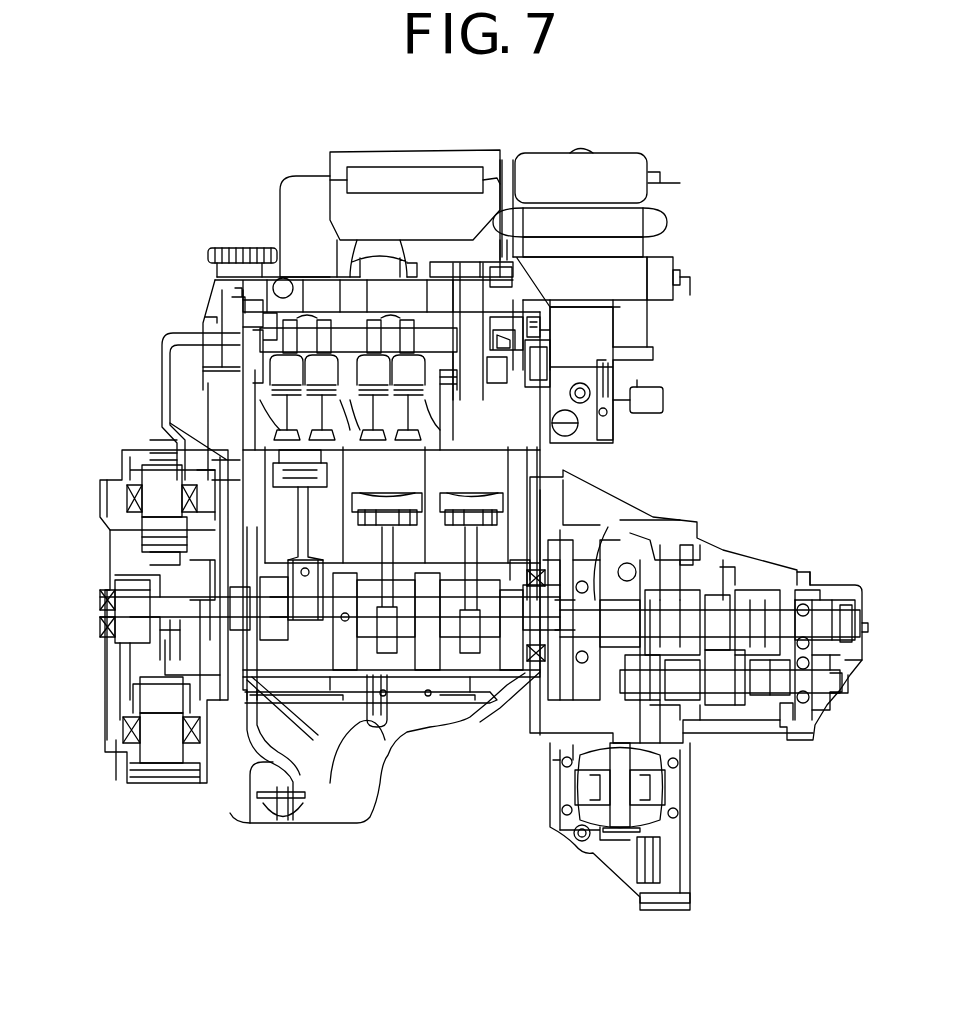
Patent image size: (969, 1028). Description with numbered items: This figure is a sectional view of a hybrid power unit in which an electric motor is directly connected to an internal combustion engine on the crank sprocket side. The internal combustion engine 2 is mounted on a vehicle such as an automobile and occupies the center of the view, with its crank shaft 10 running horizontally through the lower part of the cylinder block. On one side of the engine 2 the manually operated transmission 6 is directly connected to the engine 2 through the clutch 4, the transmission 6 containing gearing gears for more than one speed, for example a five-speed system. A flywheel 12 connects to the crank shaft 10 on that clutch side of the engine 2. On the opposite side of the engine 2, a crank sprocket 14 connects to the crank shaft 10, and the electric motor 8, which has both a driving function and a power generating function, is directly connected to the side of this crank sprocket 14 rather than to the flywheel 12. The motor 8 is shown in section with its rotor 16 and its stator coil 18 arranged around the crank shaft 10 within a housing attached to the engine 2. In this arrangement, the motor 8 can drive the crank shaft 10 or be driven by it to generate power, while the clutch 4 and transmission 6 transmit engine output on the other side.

The internal combustion engine 2 is at (552, 137).
The clutch 4 is at (630, 528).
The manually operated transmission 6 is at (757, 568).
The electric motor 8 is at (110, 757).
The crank shaft 10 is at (267, 625).
The flywheel 12 is at (585, 514).
The crank sprocket 14 is at (243, 585).
The rotor 16 is at (157, 693).
The stator coil 18 is at (162, 753).